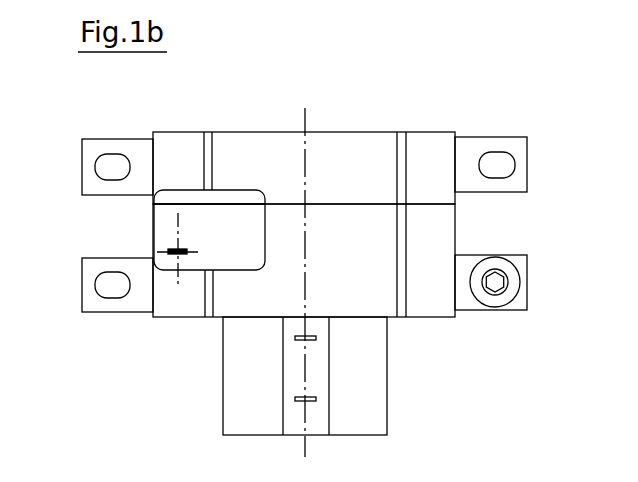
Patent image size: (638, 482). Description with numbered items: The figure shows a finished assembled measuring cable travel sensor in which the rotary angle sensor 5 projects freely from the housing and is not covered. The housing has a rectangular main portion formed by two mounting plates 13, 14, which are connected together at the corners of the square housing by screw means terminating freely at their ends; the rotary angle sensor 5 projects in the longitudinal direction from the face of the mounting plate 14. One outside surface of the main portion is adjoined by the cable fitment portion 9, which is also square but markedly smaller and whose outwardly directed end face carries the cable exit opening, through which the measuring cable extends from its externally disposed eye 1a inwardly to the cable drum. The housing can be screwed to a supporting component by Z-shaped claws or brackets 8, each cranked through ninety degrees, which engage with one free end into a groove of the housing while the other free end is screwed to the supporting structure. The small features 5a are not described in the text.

The eye of the measuring cable 1a is at (180, 252).
The rotary angle sensor 5 is at (305, 376).
The contact clips 5a is at (314, 338).
The Z-shaped claws or brackets 8 is at (88, 150).
The cable fitment portion 9 is at (209, 230).
The mounting plate 13 is at (304, 168).
The mounting plate 14 is at (304, 260).